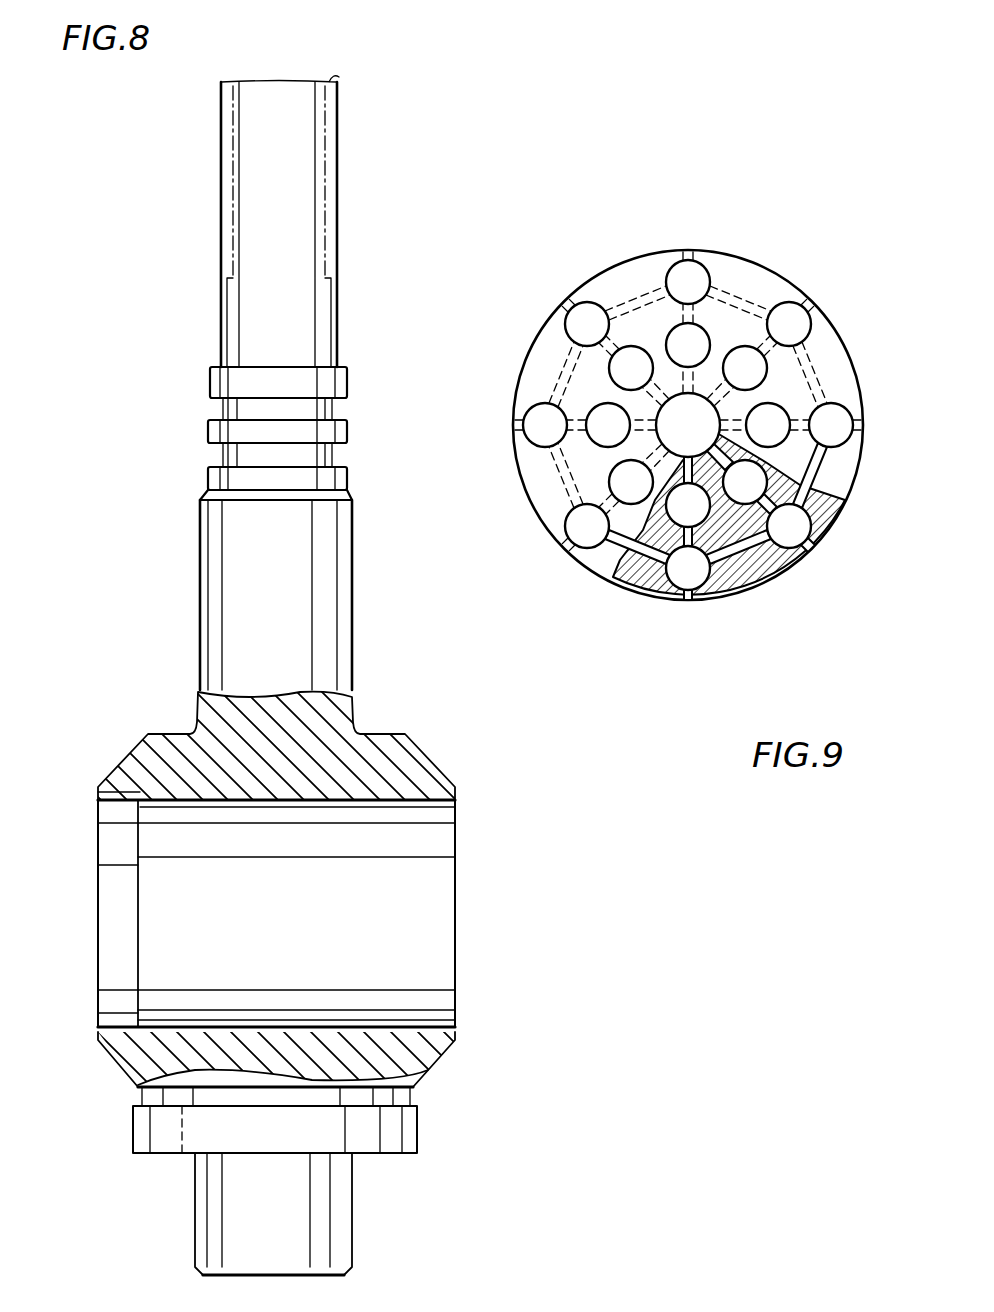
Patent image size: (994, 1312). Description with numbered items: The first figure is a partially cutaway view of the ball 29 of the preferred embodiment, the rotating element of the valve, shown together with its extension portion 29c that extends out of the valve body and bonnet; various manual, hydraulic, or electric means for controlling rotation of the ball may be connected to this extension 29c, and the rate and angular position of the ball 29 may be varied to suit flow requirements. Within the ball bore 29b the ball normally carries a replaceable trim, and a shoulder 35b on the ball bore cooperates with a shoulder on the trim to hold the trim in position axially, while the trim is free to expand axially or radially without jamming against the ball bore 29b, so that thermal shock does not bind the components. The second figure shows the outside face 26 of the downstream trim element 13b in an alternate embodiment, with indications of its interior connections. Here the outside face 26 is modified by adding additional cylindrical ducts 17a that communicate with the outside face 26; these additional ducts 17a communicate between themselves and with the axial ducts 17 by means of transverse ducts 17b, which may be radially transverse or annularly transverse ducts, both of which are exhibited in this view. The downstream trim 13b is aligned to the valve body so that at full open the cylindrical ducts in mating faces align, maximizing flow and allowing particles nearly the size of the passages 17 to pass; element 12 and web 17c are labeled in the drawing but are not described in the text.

In FIG. 8, the shaft 12 is at (208, 588).
In FIG. 8, the ball 29 is at (418, 772).
In FIG. 8, the ball bore 29b is at (427, 1025).
In FIG. 8, the extension portion 29c is at (231, 315).
In FIG. 8, the shoulder 35b is at (138, 1028).
In FIG. 9, the outside face 26 is at (846, 343).
In FIG. 9, the ducts 17 is at (742, 356).
In FIG. 9, the additional cylindrical ducts 17a is at (682, 263).
In FIG. 9, the transverse ducts 17b is at (632, 593).
In FIG. 9, the web 17c is at (688, 603).
In FIG. 9, the downstream trim element 13b is at (530, 500).